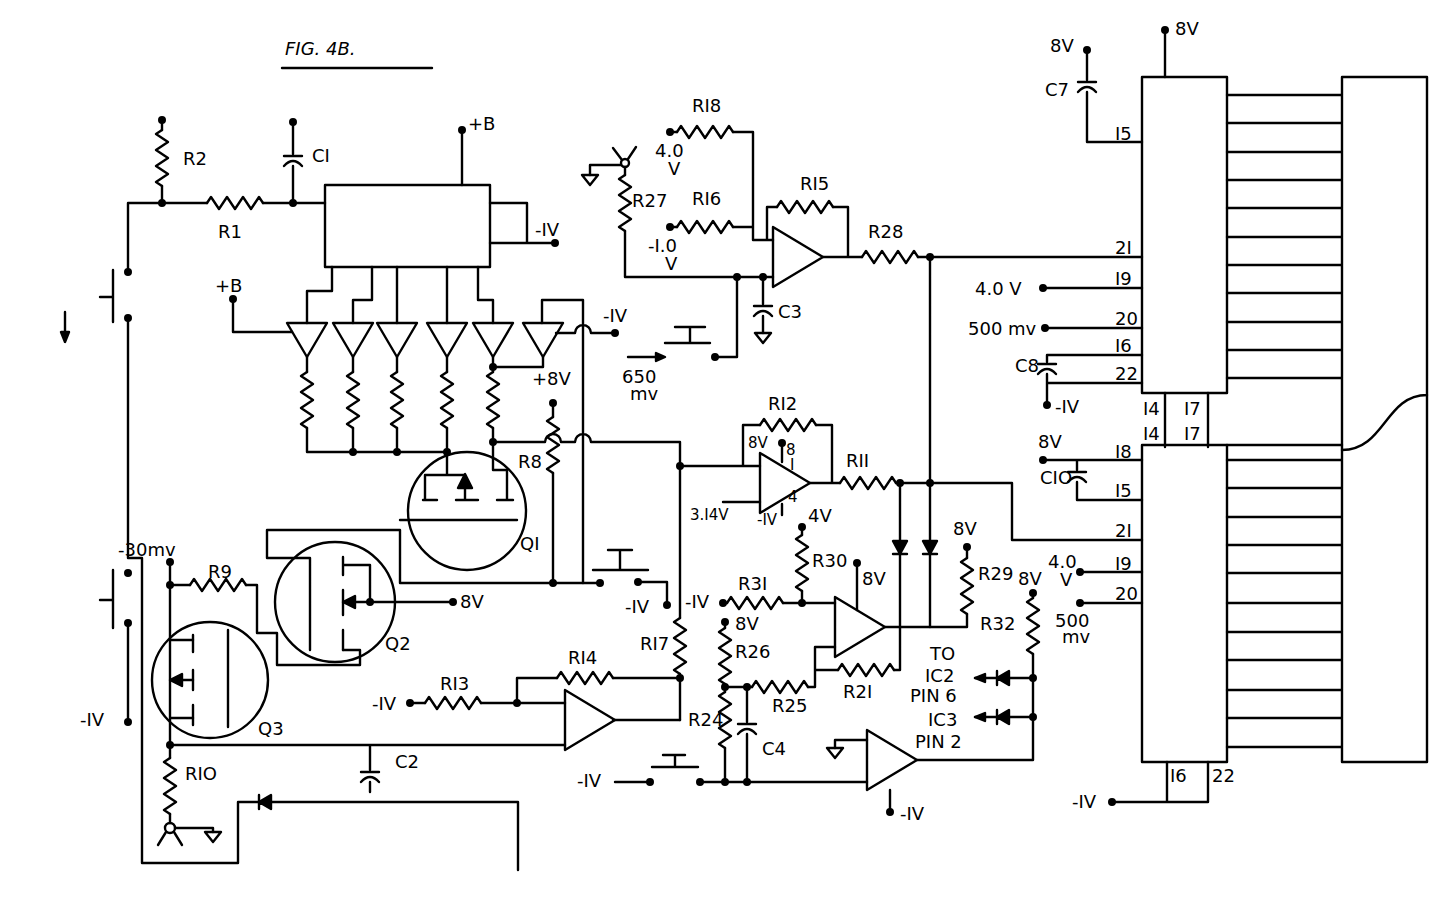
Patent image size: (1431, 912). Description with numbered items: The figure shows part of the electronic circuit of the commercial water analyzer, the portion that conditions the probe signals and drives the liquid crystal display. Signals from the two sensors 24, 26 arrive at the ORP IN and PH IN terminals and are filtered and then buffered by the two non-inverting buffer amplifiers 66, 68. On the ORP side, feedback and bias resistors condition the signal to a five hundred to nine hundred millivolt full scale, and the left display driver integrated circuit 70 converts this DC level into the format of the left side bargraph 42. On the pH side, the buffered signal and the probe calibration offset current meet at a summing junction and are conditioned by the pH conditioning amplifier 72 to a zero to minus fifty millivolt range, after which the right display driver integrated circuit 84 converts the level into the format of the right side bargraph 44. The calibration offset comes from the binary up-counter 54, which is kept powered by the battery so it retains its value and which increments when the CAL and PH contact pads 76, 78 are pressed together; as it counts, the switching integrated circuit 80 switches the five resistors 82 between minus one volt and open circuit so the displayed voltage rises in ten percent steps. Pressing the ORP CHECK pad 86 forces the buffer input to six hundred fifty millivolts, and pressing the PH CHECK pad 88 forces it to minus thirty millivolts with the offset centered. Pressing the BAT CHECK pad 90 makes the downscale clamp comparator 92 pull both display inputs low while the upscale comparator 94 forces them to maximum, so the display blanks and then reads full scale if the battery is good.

The ORP sensor 24 is at (612, 157).
The pH sensor 26 is at (160, 835).
The left side bargraph 42 is at (1390, 182).
The right side bargraph 44 is at (1390, 676).
The integrated circuit IC4 54 is at (415, 185).
The non-inverting amplifier IC2b 66 is at (808, 267).
The non-inverting amplifier IC3b 68 is at (585, 698).
The IC8 70 is at (1142, 186).
The IC3a 72 is at (805, 490).
The CAL contact pad 76 is at (92, 583).
The PH contact pad 78 is at (92, 282).
The IC5 80 is at (250, 366).
The resistors 82 is at (353, 430).
The IC9 84 is at (1142, 720).
The ORP CHECK contact pad 86 is at (673, 327).
The PH CHECK contact pad 88 is at (625, 550).
The BAT CHECK contact pad 90 is at (660, 755).
The IC6a 92 is at (880, 634).
The IC6b 94 is at (900, 775).